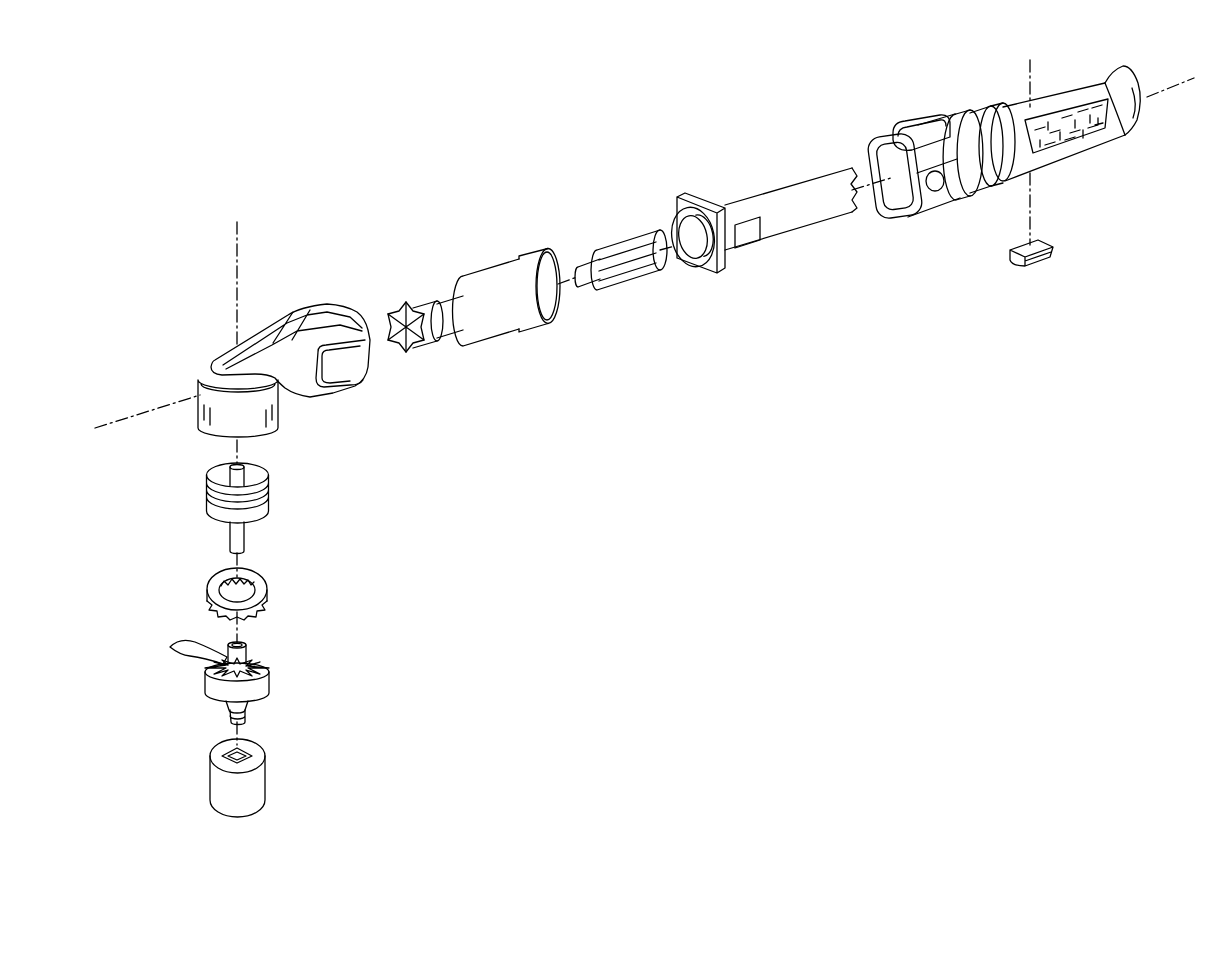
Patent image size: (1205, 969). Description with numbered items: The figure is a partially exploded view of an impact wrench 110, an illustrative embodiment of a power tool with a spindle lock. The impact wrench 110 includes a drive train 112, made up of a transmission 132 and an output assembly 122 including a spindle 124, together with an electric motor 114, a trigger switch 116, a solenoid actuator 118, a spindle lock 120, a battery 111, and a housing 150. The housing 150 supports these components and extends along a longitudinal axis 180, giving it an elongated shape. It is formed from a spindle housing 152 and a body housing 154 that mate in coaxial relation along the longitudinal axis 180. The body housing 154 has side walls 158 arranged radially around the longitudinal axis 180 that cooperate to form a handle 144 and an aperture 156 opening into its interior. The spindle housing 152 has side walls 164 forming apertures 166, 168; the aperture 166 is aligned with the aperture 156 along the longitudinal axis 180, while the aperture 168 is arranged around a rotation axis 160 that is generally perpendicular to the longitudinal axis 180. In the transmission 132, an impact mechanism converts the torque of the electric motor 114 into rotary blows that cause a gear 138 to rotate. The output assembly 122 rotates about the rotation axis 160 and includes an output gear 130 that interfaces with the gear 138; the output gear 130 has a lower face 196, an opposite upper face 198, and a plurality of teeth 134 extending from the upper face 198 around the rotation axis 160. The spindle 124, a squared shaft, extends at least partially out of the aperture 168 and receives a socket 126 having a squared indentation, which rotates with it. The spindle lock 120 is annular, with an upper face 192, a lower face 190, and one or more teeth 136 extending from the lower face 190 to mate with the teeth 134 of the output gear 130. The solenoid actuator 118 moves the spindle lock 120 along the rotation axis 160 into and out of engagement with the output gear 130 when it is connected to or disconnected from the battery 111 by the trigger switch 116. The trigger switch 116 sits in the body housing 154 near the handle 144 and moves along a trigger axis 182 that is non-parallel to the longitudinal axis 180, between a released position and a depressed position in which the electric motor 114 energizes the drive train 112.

The impact wrench 110 is at (293, 141).
The battery 111 is at (801, 195).
The drive train 112 is at (392, 667).
The electric motor 114 is at (640, 268).
The trigger switch 116 is at (1050, 262).
The solenoid actuator 118 is at (265, 508).
The spindle lock 120 is at (332, 604).
The output assembly 122 is at (293, 684).
The spindle 124 is at (247, 716).
The socket 126 is at (256, 785).
The output gear 130 is at (205, 678).
The transmission 132 is at (517, 345).
The teeth 134 is at (186, 647).
The teeth 136 is at (268, 604).
The gear 138 is at (405, 310).
The handle 144 is at (1090, 145).
The housing 150 is at (857, 72).
The spindle housing 152 is at (305, 302).
The body housing 154 is at (952, 102).
The aperture 156 is at (906, 188).
The side walls 158 is at (912, 130).
The rotation axis 160 is at (240, 256).
The side walls 164 is at (283, 330).
The aperture 166 is at (368, 376).
The aperture 168 is at (207, 434).
The longitudinal axis 180 is at (1170, 90).
The trigger axis 182 is at (1028, 75).
The lower face 190 is at (257, 618).
The upper face 192 is at (262, 590).
The lower face 196 is at (213, 692).
The upper face 198 is at (270, 675).